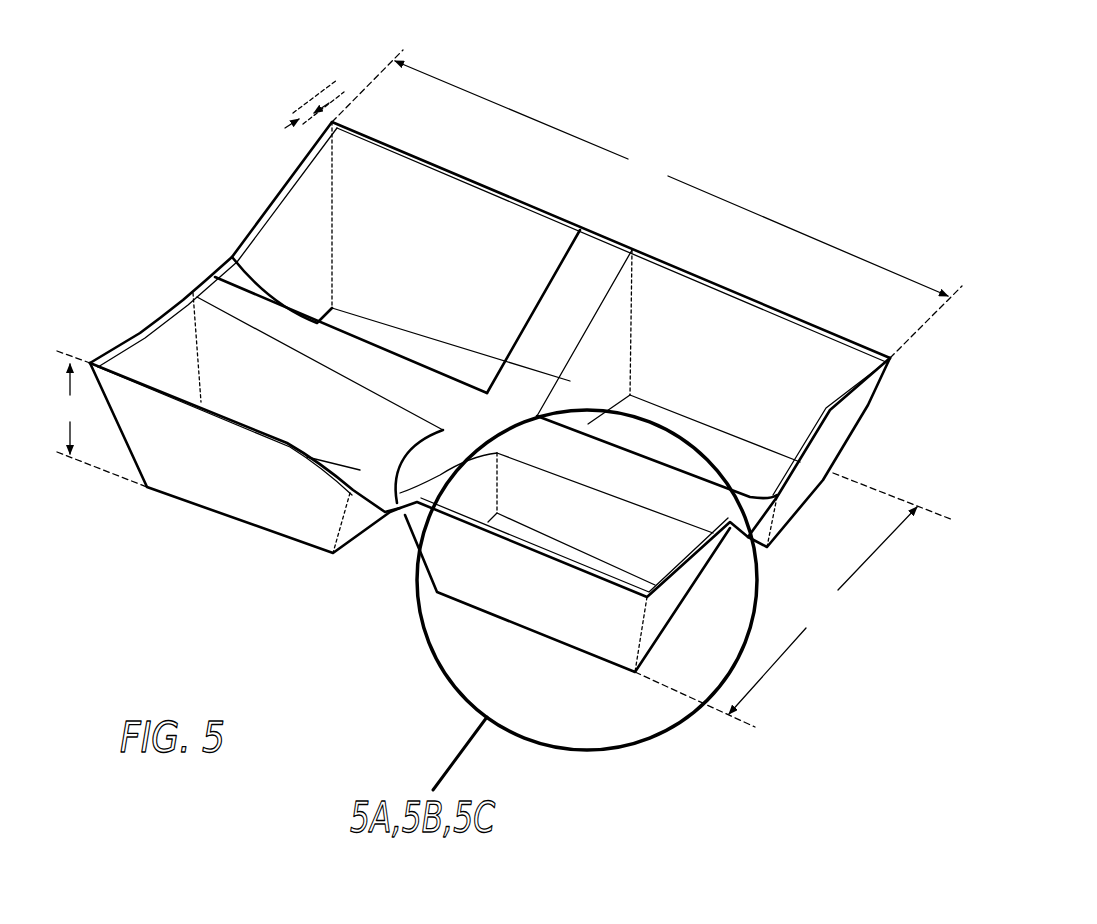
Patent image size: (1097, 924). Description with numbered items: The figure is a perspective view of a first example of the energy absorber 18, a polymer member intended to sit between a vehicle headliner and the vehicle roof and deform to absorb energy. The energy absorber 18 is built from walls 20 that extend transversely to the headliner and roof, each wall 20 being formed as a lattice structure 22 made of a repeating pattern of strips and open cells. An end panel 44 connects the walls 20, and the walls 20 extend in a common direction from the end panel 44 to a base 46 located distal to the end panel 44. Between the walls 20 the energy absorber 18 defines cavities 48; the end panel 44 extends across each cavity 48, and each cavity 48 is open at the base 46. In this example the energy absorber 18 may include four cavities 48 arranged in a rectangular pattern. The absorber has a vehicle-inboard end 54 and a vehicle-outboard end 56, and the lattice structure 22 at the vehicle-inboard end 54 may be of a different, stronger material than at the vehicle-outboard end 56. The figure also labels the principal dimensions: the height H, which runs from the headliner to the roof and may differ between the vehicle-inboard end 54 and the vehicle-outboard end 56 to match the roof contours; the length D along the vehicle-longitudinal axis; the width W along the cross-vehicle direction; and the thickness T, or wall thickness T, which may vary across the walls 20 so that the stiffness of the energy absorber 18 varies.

The energy absorber 18 is at (775, 165).
The wall 20 is at (303, 200).
The lattice structure 22 is at (487, 230).
The end panel 44 is at (395, 340).
The base 46 is at (270, 200).
The cavity 48 is at (313, 270).
The vehicle-inboard end 54 is at (357, 578).
The vehicle-outboard end 56 is at (603, 103).
The length D is at (647, 204).
The height H is at (102, 419).
The width W is at (794, 600).
The thickness T is at (302, 121).